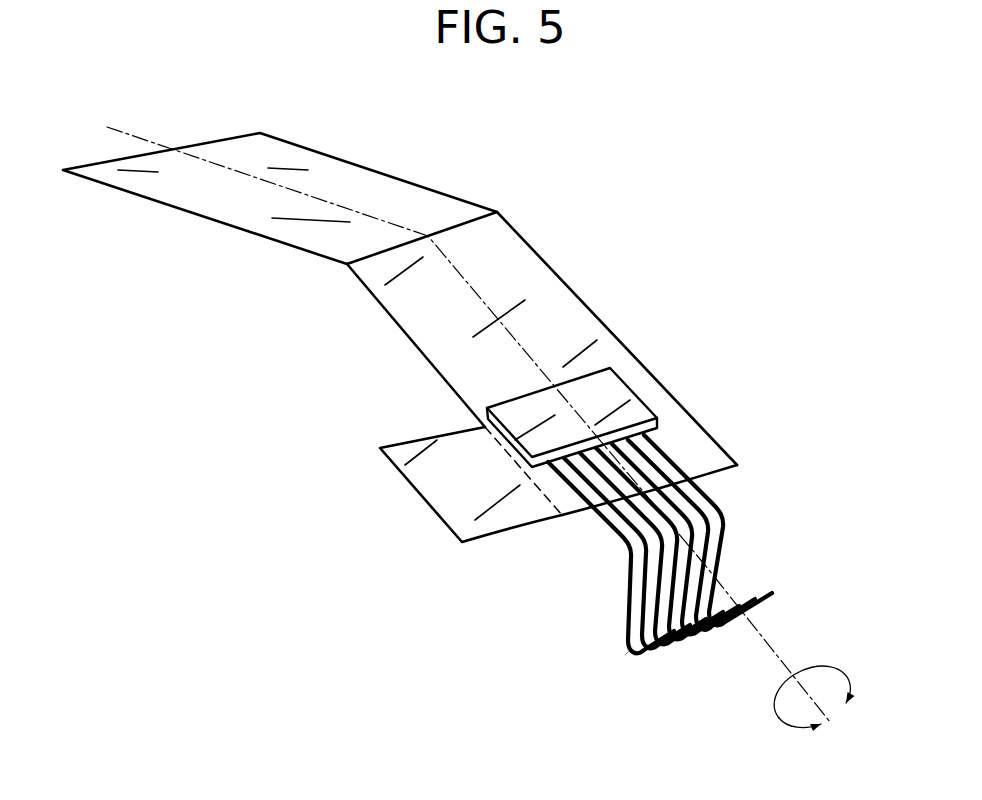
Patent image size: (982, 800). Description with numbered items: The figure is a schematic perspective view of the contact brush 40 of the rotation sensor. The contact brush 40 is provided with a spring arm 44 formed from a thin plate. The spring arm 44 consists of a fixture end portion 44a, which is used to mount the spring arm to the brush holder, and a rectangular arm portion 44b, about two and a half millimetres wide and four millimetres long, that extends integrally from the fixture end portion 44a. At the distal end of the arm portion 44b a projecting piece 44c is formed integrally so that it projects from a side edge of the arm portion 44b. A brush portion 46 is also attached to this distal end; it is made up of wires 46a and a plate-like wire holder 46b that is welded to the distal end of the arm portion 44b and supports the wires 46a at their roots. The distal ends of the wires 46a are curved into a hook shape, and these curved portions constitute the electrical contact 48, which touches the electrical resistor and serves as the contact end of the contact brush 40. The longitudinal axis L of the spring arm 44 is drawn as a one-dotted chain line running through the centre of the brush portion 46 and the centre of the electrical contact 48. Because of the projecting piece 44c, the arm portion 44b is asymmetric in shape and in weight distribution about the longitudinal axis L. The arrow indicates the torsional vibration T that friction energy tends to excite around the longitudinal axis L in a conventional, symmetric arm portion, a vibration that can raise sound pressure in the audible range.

The contact brush 40 is at (522, 200).
The spring arm 44 is at (388, 313).
The fixture end portion 44a is at (335, 178).
The arm portion 44b is at (547, 307).
The projecting piece 44c is at (437, 478).
The brush portion 46 is at (687, 291).
The wires 46a is at (718, 512).
The wire holder 46b is at (617, 397).
The electrical contact 48 is at (618, 655).
The longitudinal axis L is at (483, 298).
The torsional vibration T is at (775, 707).